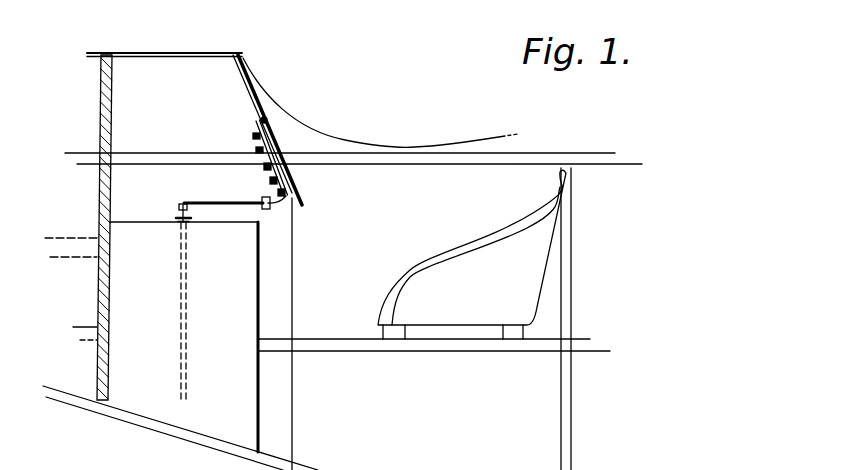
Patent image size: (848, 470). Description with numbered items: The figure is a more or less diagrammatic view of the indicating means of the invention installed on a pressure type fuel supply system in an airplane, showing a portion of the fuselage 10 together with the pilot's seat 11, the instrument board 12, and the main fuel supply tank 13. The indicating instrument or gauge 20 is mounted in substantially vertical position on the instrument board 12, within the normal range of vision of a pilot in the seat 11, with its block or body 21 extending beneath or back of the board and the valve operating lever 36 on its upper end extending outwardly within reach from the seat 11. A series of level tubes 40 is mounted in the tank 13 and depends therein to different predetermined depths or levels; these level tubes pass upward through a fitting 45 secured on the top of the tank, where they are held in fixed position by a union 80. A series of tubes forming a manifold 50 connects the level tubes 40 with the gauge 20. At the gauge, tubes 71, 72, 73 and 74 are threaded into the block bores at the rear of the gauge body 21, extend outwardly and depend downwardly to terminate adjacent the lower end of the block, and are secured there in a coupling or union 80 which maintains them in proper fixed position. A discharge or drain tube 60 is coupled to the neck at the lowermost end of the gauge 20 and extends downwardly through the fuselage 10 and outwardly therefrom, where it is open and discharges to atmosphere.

The fuselage 10 is at (423, 146).
The pilot's seat 11 is at (466, 262).
The instrument board 12 is at (256, 96).
The fuel supply tank 13 is at (230, 296).
The indicating instrument or gauge 20 is at (278, 140).
The block or body 21 is at (254, 137).
The valve operating lever 36 is at (262, 122).
The series of level tubes 40 is at (190, 268).
The fitting 45 is at (178, 217).
The manifold 50 is at (213, 201).
The discharge or drain tube 60 is at (294, 249).
The tube 71 is at (302, 190).
The tube 72 is at (300, 175).
The tube 73 is at (288, 156).
The tube 74 is at (255, 150).
The coupling or union 80 is at (277, 206).